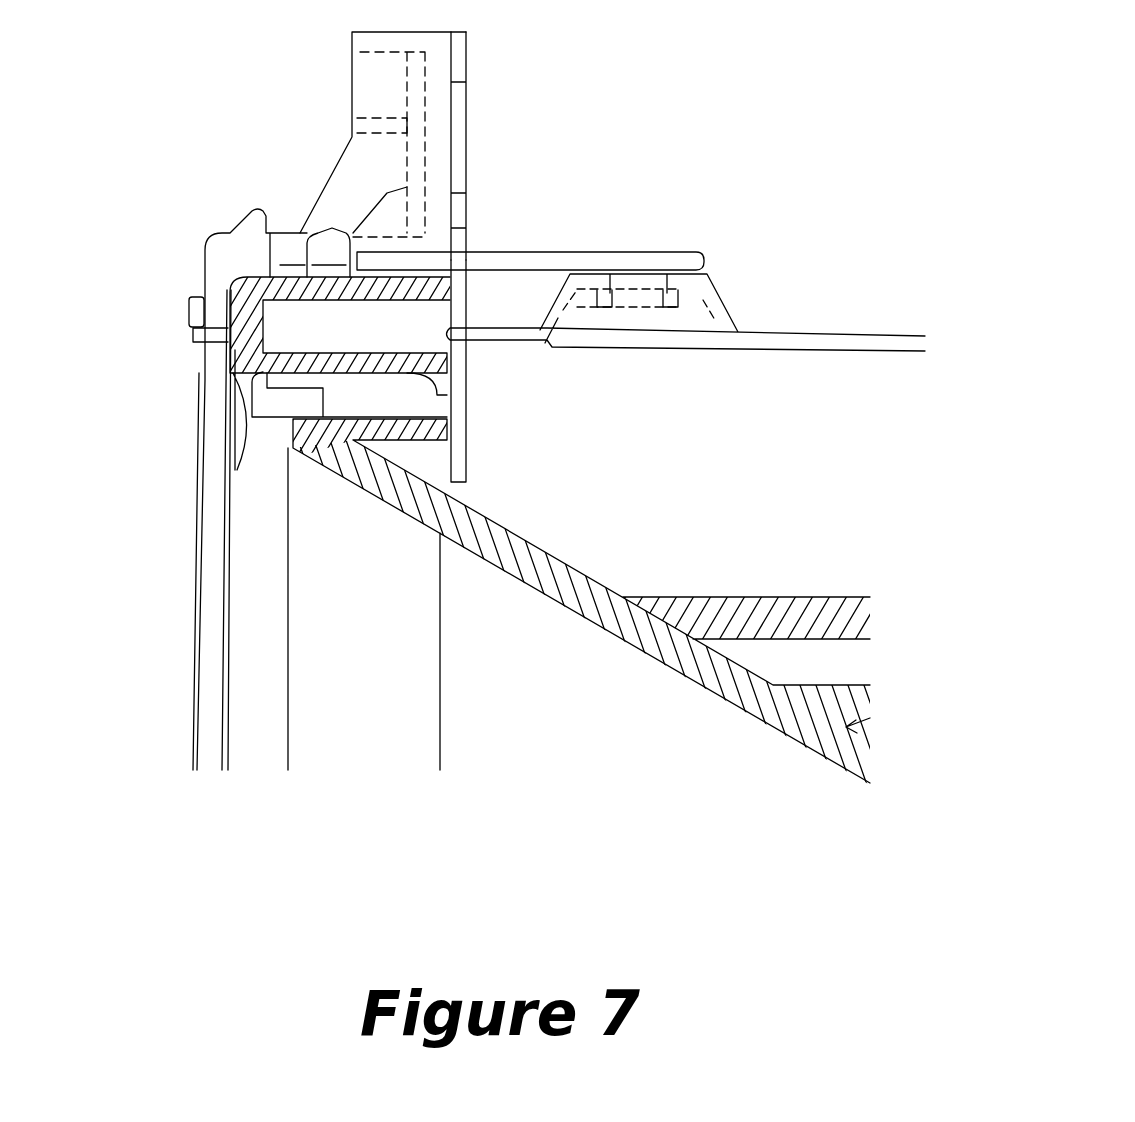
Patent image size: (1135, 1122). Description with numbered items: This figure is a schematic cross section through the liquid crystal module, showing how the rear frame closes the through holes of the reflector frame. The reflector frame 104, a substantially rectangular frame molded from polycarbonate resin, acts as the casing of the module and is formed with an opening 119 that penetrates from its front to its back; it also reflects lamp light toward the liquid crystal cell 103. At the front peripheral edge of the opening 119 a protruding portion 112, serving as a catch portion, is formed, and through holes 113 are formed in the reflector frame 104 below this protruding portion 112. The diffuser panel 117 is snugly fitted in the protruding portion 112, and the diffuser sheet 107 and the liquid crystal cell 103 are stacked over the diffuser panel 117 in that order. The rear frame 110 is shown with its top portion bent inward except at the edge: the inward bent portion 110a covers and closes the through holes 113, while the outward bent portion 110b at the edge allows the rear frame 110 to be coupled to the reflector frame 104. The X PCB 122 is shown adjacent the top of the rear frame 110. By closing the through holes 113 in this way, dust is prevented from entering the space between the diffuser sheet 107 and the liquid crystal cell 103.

The liquid crystal cell 103 is at (211, 500).
The reflector frame 104 is at (595, 596).
The diffuser sheet 107 is at (227, 562).
The rear frame 110 is at (833, 339).
The inward bent portion 110a is at (453, 462).
The outward bent portion 110b is at (456, 224).
The protruding portion 112 is at (228, 381).
The through holes 113 is at (462, 394).
The diffuser panel 117 is at (255, 658).
The opening 119 is at (227, 465).
The X PCB 122 is at (547, 263).